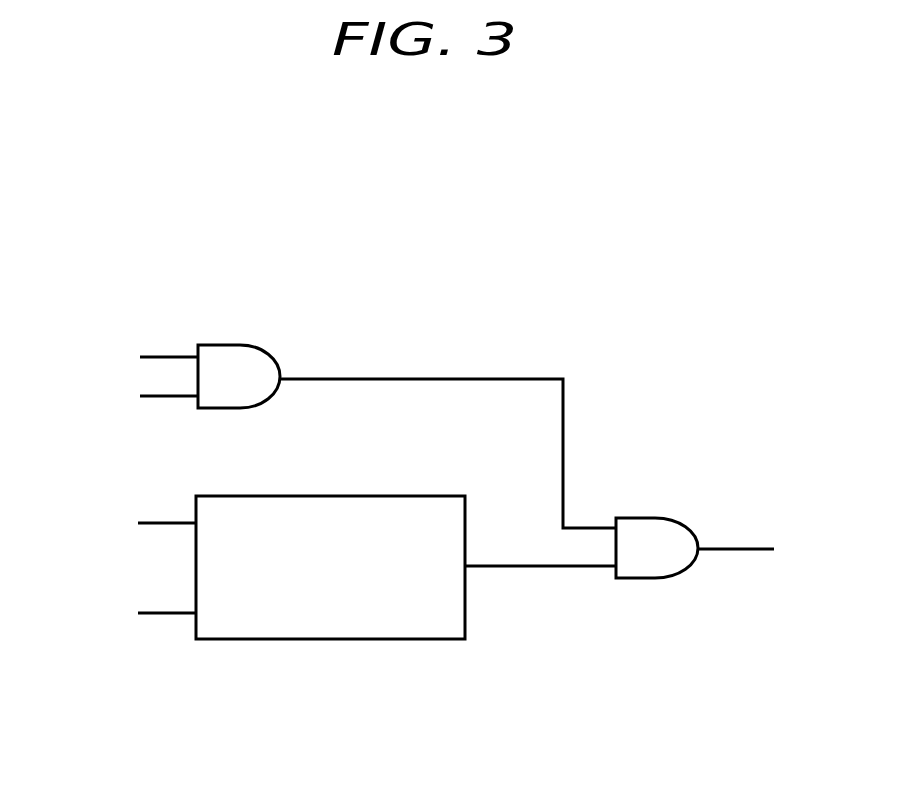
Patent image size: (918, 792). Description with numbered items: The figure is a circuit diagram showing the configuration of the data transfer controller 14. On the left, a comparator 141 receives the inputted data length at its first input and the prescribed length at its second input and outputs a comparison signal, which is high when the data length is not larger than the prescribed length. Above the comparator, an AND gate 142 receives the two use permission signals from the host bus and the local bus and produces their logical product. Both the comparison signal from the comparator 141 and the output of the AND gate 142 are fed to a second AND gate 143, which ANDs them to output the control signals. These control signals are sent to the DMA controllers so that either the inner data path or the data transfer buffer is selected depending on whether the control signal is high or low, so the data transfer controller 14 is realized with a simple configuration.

The data transfer controller 14 is at (92, 238).
The comparator 141 is at (352, 642).
The AND gate 142 is at (236, 358).
The AND gate 143 is at (665, 532).